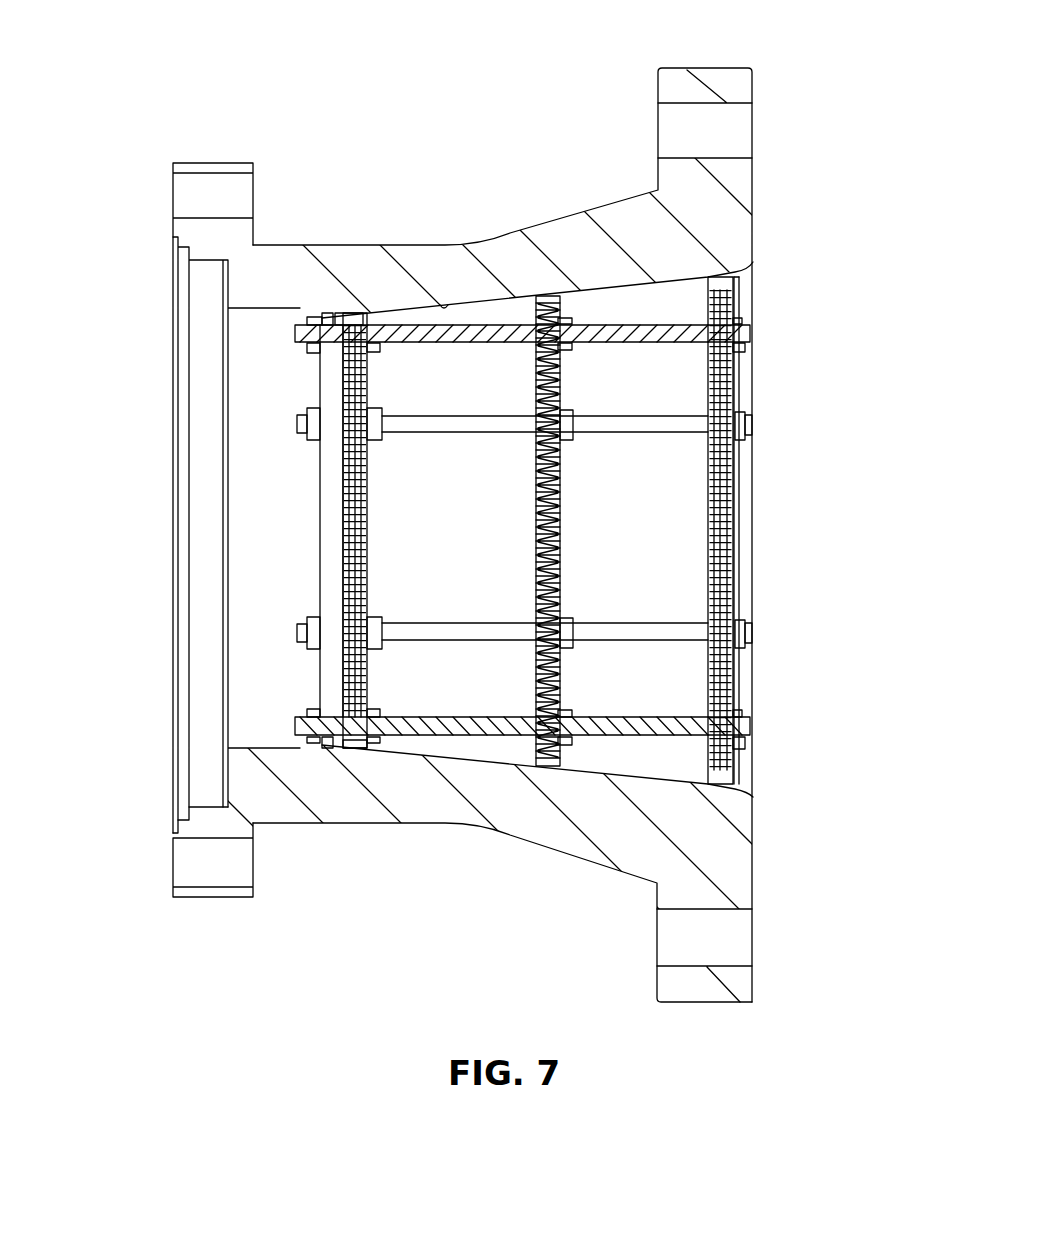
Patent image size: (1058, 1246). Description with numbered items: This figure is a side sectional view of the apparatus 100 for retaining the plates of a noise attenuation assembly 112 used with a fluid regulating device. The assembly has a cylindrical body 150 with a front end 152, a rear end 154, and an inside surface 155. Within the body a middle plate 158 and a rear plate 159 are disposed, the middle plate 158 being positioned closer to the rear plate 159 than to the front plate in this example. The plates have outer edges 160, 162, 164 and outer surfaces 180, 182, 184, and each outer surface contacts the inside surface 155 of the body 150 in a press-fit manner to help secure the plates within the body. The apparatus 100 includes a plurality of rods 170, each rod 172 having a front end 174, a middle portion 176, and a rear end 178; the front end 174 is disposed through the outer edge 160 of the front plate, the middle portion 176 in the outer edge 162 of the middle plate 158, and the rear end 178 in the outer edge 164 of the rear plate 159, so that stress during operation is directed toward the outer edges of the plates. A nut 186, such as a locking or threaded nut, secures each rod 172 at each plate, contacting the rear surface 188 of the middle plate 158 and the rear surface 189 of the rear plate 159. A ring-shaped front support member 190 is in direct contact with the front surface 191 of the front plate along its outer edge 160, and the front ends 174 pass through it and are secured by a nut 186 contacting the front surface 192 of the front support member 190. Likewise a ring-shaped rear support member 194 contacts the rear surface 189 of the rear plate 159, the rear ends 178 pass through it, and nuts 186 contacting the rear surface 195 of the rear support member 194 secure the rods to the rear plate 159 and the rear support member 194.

The apparatus 100 is at (668, 565).
The noise attenuation assembly 112 is at (107, 152).
The body 150 is at (500, 255).
The front end 152 is at (218, 897).
The rear end 154 is at (752, 836).
The inside surface 155 is at (443, 303).
The middle plate 158 is at (460, 727).
The rear plate 159 is at (728, 493).
The outer edge 160 is at (338, 745).
The outer edge 162 is at (543, 758).
The outer edge 164 is at (735, 786).
The plurality of rods 170 is at (471, 536).
The rod 172 is at (690, 347).
The front end 174 is at (335, 322).
The middle portion 176 is at (543, 300).
The rear end 178 is at (591, 610).
The outer surface 180 is at (358, 318).
The outer surface 182 is at (557, 300).
The outer surface 184 is at (722, 272).
The nut 186 is at (308, 318).
The rear surface 188 is at (561, 483).
The rear surface 189 is at (735, 297).
The front support member 190 is at (211, 521).
The front surface 191 is at (343, 605).
The front surface 192 is at (317, 517).
The rear support member 194 is at (740, 553).
The rear surface 195 is at (740, 466).